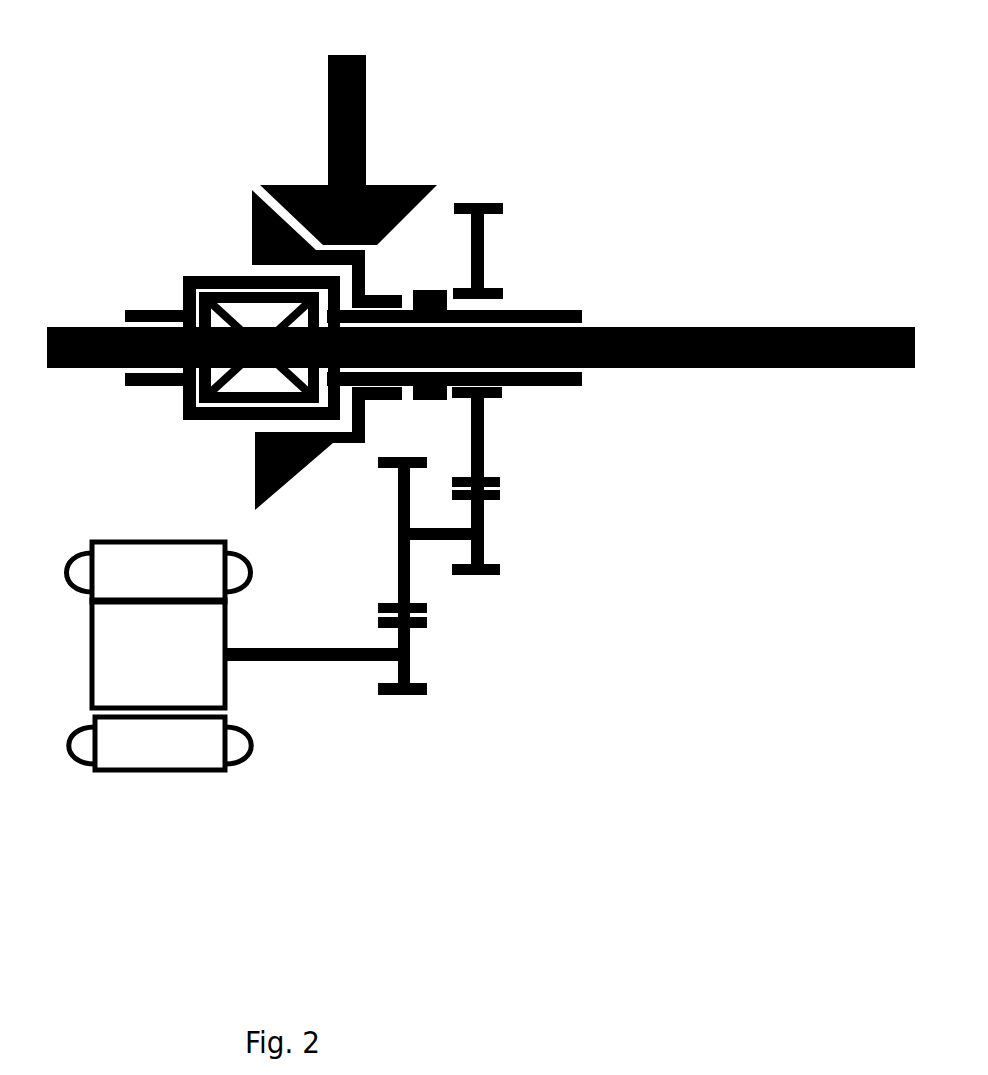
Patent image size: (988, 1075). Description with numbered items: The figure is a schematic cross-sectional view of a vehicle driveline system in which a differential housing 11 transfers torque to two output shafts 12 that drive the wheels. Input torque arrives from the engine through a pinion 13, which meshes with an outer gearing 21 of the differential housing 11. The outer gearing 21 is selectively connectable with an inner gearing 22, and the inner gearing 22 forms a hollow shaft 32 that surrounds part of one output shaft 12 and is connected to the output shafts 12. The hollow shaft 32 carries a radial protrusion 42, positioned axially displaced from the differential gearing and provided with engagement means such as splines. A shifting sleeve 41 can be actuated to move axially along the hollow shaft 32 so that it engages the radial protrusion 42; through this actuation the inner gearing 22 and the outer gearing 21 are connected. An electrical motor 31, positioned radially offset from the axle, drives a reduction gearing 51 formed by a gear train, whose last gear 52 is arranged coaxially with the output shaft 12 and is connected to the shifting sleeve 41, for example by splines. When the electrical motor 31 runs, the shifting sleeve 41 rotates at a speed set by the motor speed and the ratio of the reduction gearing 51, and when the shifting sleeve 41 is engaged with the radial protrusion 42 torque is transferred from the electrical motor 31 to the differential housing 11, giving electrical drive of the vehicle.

The differential housing 11 is at (183, 410).
The output shafts 12 is at (117, 327).
The pinion 13 is at (368, 98).
The outer gearing 21 is at (250, 207).
The inner gearing 22 is at (253, 273).
The electrical motor 31 is at (93, 540).
The hollow shaft 32 is at (565, 386).
The shifting sleeve 41 is at (433, 290).
The radial protrusion 42 is at (447, 307).
The reduction gearing 51 is at (540, 620).
The last gear 52 is at (483, 432).